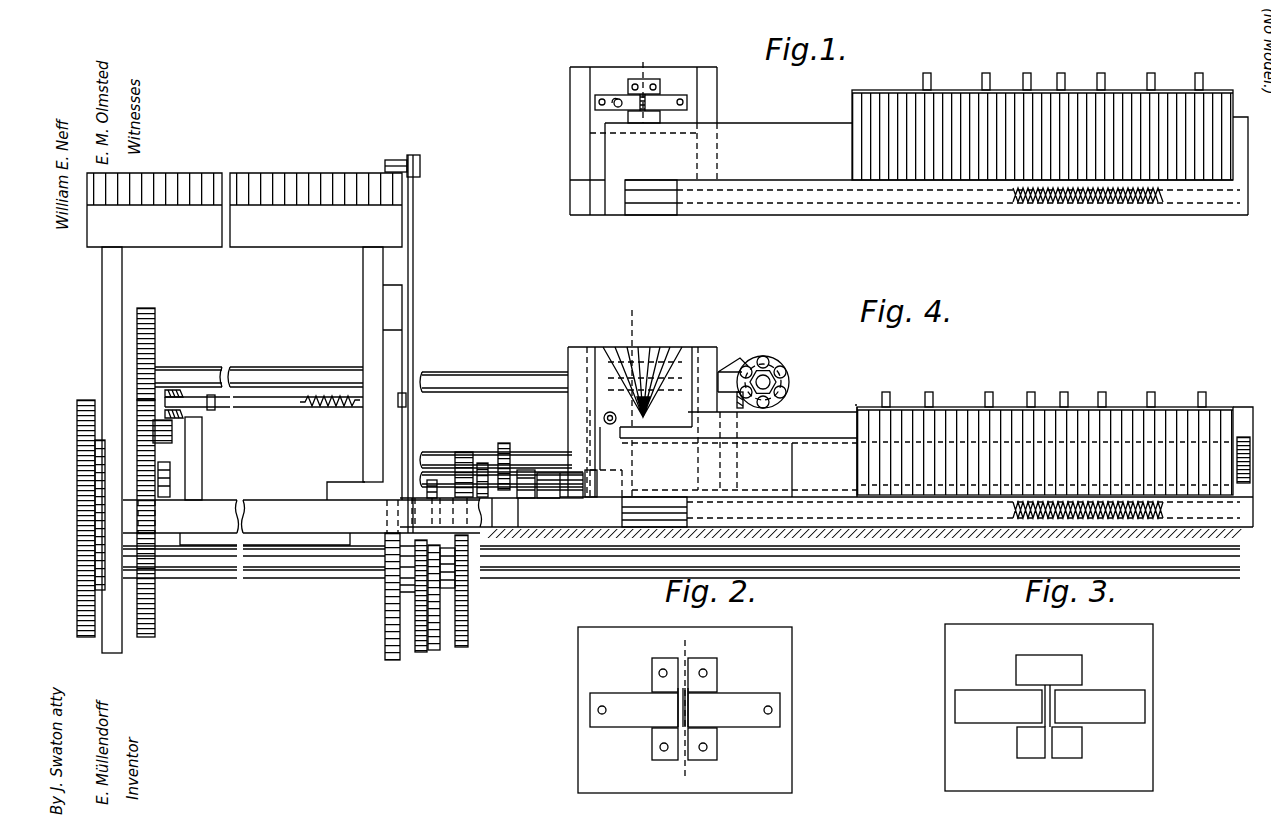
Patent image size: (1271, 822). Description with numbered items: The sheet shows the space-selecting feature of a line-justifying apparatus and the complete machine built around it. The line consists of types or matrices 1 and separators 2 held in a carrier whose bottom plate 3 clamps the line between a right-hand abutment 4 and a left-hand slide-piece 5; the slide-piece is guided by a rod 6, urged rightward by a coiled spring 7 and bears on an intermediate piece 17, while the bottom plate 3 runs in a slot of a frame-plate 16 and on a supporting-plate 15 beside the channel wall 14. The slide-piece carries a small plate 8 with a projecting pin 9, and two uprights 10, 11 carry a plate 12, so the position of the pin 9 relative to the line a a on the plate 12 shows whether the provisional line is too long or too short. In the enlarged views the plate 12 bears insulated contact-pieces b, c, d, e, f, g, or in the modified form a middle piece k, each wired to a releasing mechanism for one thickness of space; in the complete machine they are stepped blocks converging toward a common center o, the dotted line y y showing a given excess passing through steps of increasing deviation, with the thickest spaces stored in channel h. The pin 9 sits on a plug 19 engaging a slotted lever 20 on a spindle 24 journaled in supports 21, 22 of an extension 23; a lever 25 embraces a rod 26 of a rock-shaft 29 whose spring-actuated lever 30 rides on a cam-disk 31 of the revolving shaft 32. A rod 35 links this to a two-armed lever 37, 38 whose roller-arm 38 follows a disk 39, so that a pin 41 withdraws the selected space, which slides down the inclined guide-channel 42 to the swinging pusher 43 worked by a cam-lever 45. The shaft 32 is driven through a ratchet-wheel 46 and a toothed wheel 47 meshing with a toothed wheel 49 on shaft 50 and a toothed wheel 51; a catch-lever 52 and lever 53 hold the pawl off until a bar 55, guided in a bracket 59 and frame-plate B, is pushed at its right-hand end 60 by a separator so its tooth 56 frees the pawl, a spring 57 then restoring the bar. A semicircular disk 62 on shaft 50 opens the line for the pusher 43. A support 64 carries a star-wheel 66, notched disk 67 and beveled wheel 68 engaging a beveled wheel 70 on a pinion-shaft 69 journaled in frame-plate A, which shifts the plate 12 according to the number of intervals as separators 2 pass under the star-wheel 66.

In FIG. 1, the types or matrices 1 is at (997, 96).
In FIG. 4, the types or matrices 1 is at (953, 412).
In FIG. 1, the separators 2 is at (932, 80).
In FIG. 4, the separators 2 is at (890, 400).
In FIG. 1, the bottom plate 3 is at (909, 197).
In FIG. 4, the bottom plate 3 is at (870, 513).
In FIG. 1, the right-hand abutment 4 is at (1240, 166).
In FIG. 4, the right-hand abutment 4 is at (1243, 467).
In FIG. 1, the slide-piece 5 is at (721, 169).
In FIG. 4, the slide-piece 5 is at (765, 465).
In FIG. 1, the rod 6 is at (651, 197).
In FIG. 4, the rod 6 is at (680, 512).
In FIG. 1, the coiled spring 7 is at (1070, 205).
In FIG. 4, the coiled spring 7 is at (1170, 510).
In FIG. 1, the small plate 8 is at (617, 107).
In FIG. 1, the pin 9 is at (610, 106).
In FIG. 4, the pin 9 is at (609, 411).
In FIG. 1, the upright 10 is at (643, 141).
In FIG. 4, the upright 10 is at (642, 422).
In FIG. 1, the upright 11 is at (707, 123).
In FIG. 4, the upright 11 is at (704, 418).
In FIG. 1, the plate 12 is at (641, 101).
In FIG. 4, the plate 12 is at (645, 384).
In FIG. 2, the plate 12 is at (685, 710).
In FIG. 3, the plate 12 is at (1103, 666).
In FIG. 4, the channel wall 14 is at (795, 424).
In FIG. 4, the supporting-plate 15 is at (542, 514).
In FIG. 4, the frame-plate 16 is at (301, 507).
In FIG. 4, the intermediate piece 17 is at (815, 470).
In FIG. 4, the plug 19 is at (604, 421).
In FIG. 4, the slotted lever 20 is at (601, 452).
In FIG. 4, the support 21 is at (526, 484).
In FIG. 4, the support 22 is at (601, 483).
In FIG. 4, the extension 23 is at (826, 515).
In FIG. 4, the spindle 24 is at (563, 490).
In FIG. 4, the lever 25 is at (504, 443).
In FIG. 4, the rod 26 is at (549, 453).
In FIG. 4, the rock-shaft 29 is at (440, 486).
In FIG. 4, the spring-actuated lever 30 is at (478, 434).
In FIG. 4, the cam-disk 31 is at (456, 568).
In FIG. 4, the intermittingly-revolving shaft 32 is at (681, 562).
In FIG. 4, the rod 35 is at (414, 197).
In FIG. 4, the two-armed spring-actuated lever 37 is at (413, 596).
In FIG. 4, the roller-arm 38 is at (424, 615).
In FIG. 4, the disk 39 is at (452, 600).
In FIG. 4, the pin 41 is at (400, 157).
In FIG. 4, the inclined guide-channel 42 is at (392, 437).
In FIG. 4, the swinging pusher 43 is at (385, 635).
In FIG. 4, the cam-lever 45 is at (396, 592).
In FIG. 4, the ratchet-wheel 46 is at (170, 431).
In FIG. 4, the toothed wheel 47 is at (137, 436).
In FIG. 4, the toothed wheel 49 is at (152, 332).
In FIG. 4, the shaft 50 is at (292, 373).
In FIG. 4, the toothed wheel 51 is at (152, 600).
In FIG. 4, the catch-lever 52 is at (166, 479).
In FIG. 4, the lever 53 is at (193, 458).
In FIG. 4, the longitudinally-movable bar 55 is at (264, 399).
In FIG. 4, the tooth 56 is at (213, 408).
In FIG. 4, the spring 57 is at (330, 404).
In FIG. 4, the bracket 59 is at (200, 415).
In FIG. 4, the right-hand end of bar 60 is at (394, 400).
In FIG. 4, the semicircular disk 62 is at (392, 392).
In FIG. 4, the support 64 is at (732, 402).
In FIG. 4, the star-wheel 66 is at (790, 386).
In FIG. 4, the notched disk 67 is at (770, 361).
In FIG. 4, the beveled wheel 68 is at (789, 378).
In FIG. 4, the pinion-shaft 69 is at (494, 370).
In FIG. 4, the beveled wheel 70 is at (745, 368).
In FIG. 4, the frame-plate A is at (112, 450).
In FIG. 4, the frame-plate B is at (373, 364).
In FIG. 1, the line a a is at (640, 84).
In FIG. 2, the line a a is at (691, 705).
In FIG. 2, the contact-piece b is at (634, 710).
In FIG. 3, the contact-piece b is at (998, 706).
In FIG. 2, the contact-piece c is at (664, 733).
In FIG. 3, the contact-piece c is at (1031, 742).
In FIG. 2, the contact-piece d is at (670, 688).
In FIG. 2, the contact-piece e is at (704, 688).
In FIG. 2, the contact-piece f is at (690, 721).
In FIG. 3, the contact-piece f is at (1067, 742).
In FIG. 2, the contact-piece g is at (725, 705).
In FIG. 3, the contact-piece g is at (1100, 706).
In FIG. 3, the middle contact-piece k is at (1049, 670).
In FIG. 4, the center of convergency o is at (651, 416).
In FIG. 4, the line y y is at (739, 393).
In FIG. 4, the space channel h is at (322, 178).